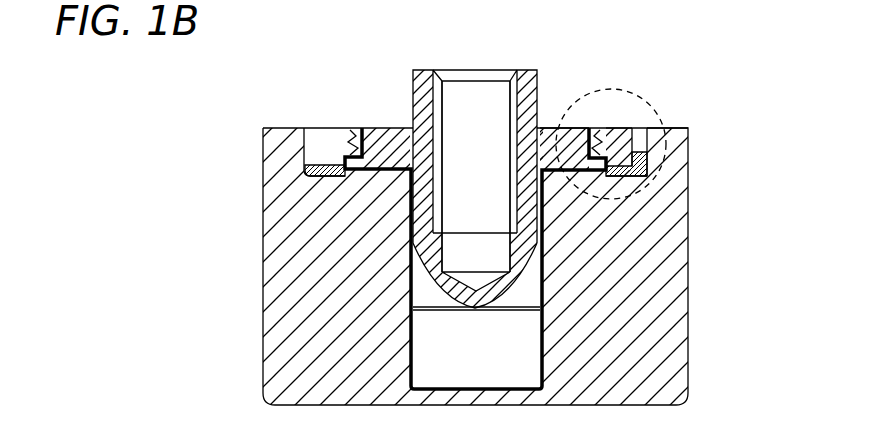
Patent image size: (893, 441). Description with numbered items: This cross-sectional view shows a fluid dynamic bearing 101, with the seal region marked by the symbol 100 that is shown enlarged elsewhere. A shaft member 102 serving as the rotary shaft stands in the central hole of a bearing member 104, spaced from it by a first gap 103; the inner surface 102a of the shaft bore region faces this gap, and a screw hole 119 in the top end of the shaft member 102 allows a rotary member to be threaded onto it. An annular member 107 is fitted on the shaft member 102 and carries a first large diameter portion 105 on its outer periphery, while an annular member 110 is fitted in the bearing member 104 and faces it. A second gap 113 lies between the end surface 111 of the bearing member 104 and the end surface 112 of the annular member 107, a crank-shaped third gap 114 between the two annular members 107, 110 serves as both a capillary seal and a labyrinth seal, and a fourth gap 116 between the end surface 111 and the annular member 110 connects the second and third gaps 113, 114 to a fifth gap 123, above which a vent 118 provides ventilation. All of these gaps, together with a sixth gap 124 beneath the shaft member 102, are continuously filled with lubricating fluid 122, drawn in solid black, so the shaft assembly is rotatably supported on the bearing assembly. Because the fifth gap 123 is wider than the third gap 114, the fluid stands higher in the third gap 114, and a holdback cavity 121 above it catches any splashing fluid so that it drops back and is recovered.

The enlarged-view region 100 is at (663, 112).
The fluid dynamic bearing 101 is at (323, 118).
The shaft member 102 is at (423, 96).
The inner surface of tube 102a is at (503, 118).
The first gap 103 is at (543, 279).
The bearing member 104 is at (668, 318).
The first large diameter portion 105 is at (345, 172).
The annular member on the shaft member 107 is at (556, 143).
The annular member on the bearing member 110 is at (617, 133).
The end surface of the bearing member 111 is at (582, 180).
The end surface of the annular member on the shaft member 112 is at (580, 160).
The second gap 113 is at (658, 200).
The third gap 114 is at (340, 143).
The fourth gap 116 is at (647, 178).
The vent 118 is at (636, 130).
The screw hole 119 is at (457, 122).
The holdback cavity 121 is at (383, 128).
The lubricating fluid 122 is at (648, 160).
The fifth gap 123 is at (650, 132).
The sixth gap 124 is at (450, 393).